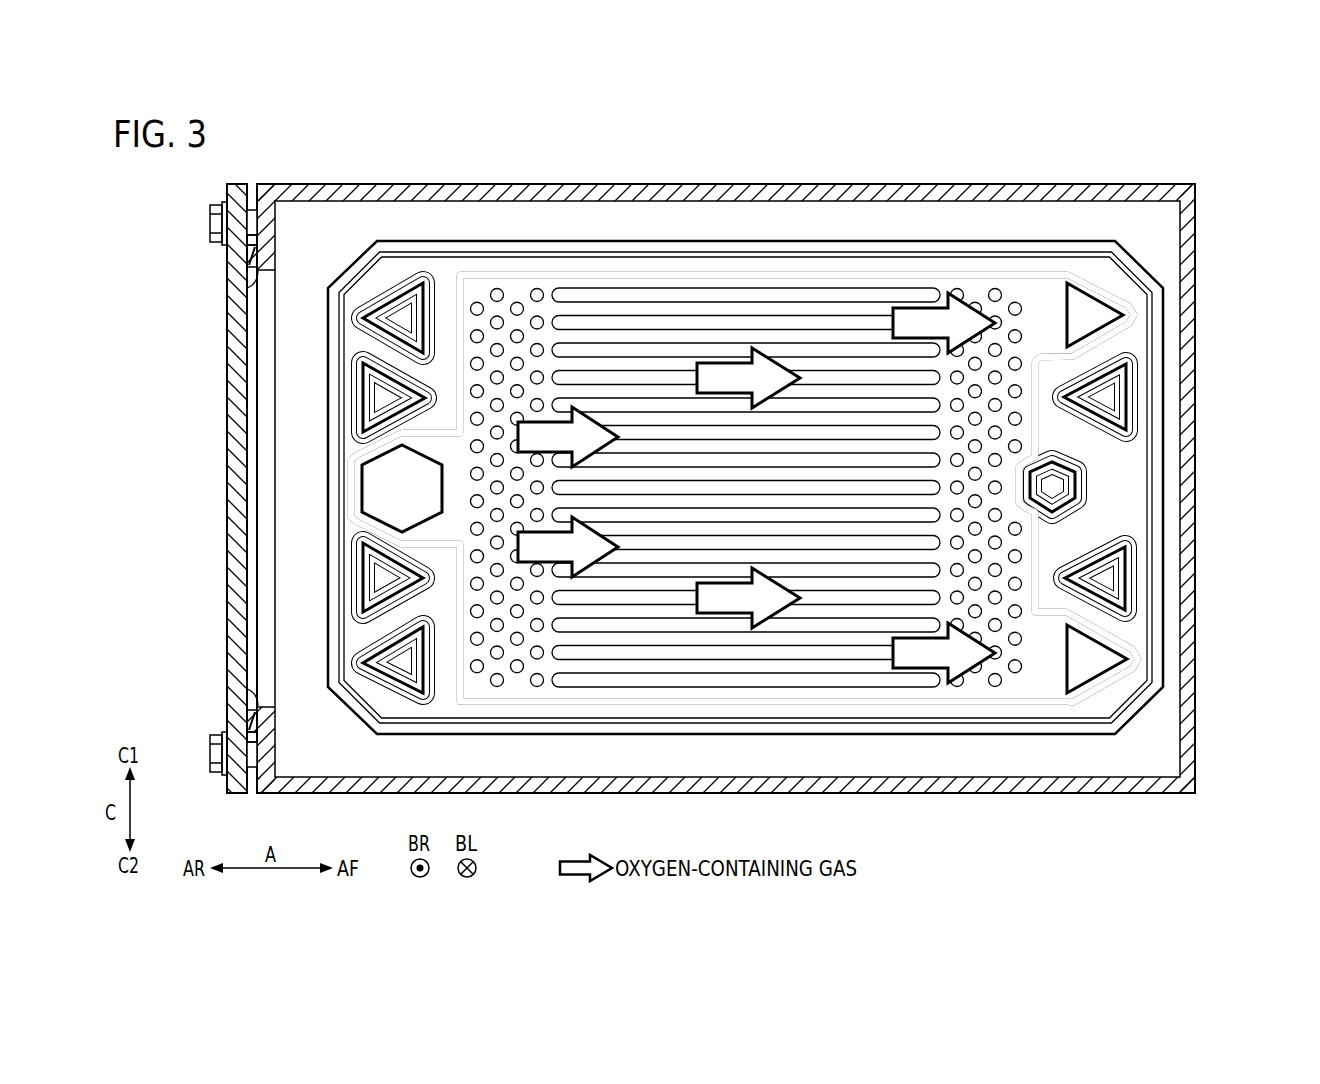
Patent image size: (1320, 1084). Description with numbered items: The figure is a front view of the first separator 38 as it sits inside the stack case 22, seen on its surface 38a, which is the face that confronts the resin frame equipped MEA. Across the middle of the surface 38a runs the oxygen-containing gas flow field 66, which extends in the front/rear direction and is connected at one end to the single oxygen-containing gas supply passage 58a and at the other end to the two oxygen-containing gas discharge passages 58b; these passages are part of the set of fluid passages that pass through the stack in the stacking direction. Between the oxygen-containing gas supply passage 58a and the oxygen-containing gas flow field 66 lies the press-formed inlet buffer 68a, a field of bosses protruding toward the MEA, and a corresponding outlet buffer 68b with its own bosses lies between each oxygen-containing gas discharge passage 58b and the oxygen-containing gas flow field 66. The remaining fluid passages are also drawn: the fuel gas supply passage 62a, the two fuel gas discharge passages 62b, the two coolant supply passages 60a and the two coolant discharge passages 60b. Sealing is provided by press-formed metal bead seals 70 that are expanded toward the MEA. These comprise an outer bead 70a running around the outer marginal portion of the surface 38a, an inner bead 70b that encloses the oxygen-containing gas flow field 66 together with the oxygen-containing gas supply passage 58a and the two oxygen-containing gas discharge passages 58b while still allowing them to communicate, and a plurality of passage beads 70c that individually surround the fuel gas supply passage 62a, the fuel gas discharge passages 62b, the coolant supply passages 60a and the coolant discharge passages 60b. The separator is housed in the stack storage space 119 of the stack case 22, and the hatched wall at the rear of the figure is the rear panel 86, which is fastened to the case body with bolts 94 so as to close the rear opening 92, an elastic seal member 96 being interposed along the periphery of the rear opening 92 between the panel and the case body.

The stack case 22 is at (683, 178).
The first separator 38 is at (750, 235).
The surface 38a is at (791, 249).
The oxygen-containing gas supply passage 58a is at (375, 495).
The oxygen-containing gas discharge passage 58b is at (1088, 316).
The coolant supply passage 60a is at (375, 403).
The coolant discharge passage 60b is at (1100, 398).
The fuel gas supply passage 62a is at (1062, 486).
The fuel gas discharge passage 62b is at (385, 318).
The oxygen-containing gas flow field 66 is at (856, 305).
The inlet buffer 68a is at (497, 287).
The outlet buffer 68b is at (995, 288).
The metal bead seal 70 is at (732, 487).
The outer bead 70a is at (1157, 672).
The inner bead 70b is at (1137, 660).
The passage bead 70c is at (358, 388).
The rear panel 86 is at (232, 196).
The rear opening 92 is at (248, 287).
The bolt 94 is at (212, 222).
The seal member 96 is at (250, 254).
The stack storage space 119 is at (858, 757).